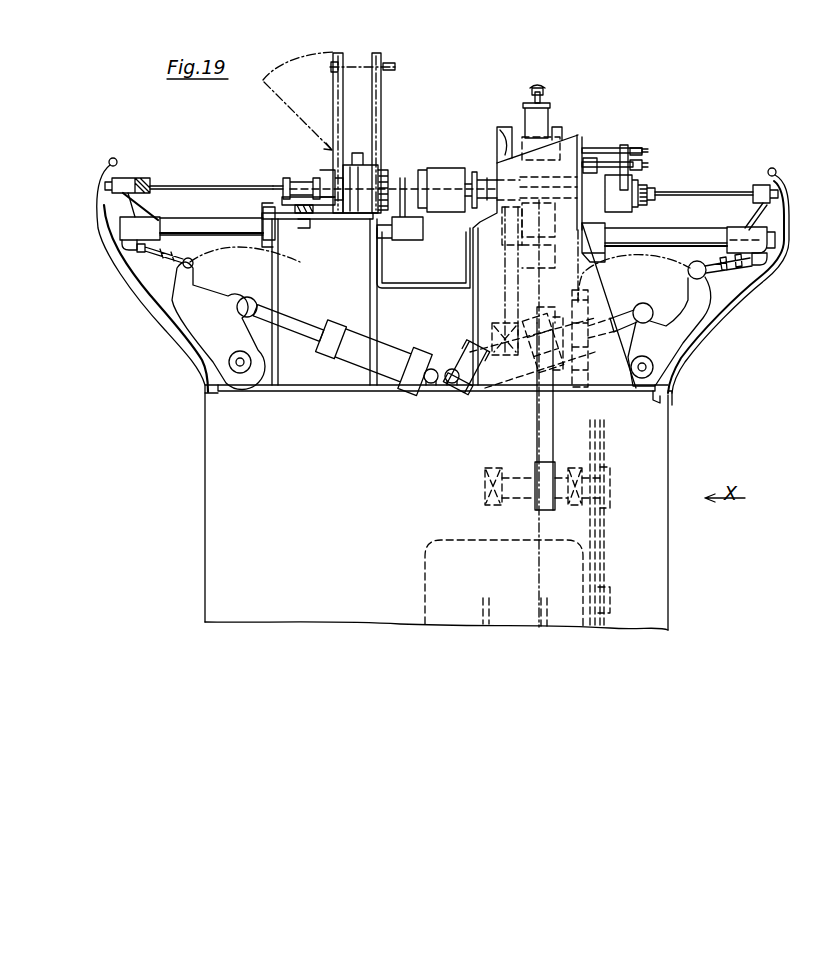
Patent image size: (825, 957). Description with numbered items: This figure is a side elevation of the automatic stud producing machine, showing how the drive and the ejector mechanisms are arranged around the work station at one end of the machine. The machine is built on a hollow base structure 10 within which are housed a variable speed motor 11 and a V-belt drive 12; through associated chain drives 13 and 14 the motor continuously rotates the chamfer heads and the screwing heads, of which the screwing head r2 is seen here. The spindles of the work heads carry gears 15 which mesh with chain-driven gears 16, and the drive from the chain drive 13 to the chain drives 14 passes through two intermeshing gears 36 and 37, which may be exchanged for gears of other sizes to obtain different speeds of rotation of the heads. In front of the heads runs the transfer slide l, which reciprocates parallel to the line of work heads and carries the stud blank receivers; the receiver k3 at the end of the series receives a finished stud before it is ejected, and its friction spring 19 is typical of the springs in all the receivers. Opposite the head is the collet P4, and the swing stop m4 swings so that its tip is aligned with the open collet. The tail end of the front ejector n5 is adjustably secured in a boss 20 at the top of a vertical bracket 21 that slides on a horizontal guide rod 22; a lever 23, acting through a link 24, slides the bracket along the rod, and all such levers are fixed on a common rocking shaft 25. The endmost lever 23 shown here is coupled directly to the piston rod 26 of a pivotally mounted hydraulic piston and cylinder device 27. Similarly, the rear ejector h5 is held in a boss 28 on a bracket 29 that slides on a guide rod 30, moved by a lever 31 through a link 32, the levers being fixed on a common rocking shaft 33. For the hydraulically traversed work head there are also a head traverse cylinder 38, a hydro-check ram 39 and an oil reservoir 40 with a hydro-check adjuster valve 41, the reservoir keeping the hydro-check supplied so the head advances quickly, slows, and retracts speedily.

The hollow base structure 10 is at (212, 518).
The variable speed motor 11 is at (428, 563).
The V-belt drive 12 is at (596, 573).
The chain drive 13 is at (538, 405).
The chain drive 14 is at (512, 305).
The gear 15 is at (546, 207).
The chain-driven gear 16 is at (551, 247).
The friction spring 19 is at (293, 178).
The boss 20 is at (123, 183).
The bracket 21 is at (140, 215).
The guide rod 22 is at (243, 216).
The lever 23 is at (186, 313).
The link 24 is at (180, 265).
The rocking shaft 25 is at (232, 364).
The piston rod 26 is at (298, 330).
The piston and cylinder device 27 is at (355, 388).
The boss 28 is at (765, 188).
The bracket 29 is at (755, 212).
The guide rod 30 is at (676, 234).
The lever 31 is at (700, 313).
The link 32 is at (729, 258).
The rocking shaft 33 is at (652, 367).
The gear 36 is at (586, 372).
The gear 37 is at (600, 287).
The head traverse cylinder 38 is at (511, 143).
The hydro-check ram 39 is at (595, 163).
The oil reservoir 40 is at (548, 118).
The hydro-check adjuster valve 41 is at (546, 94).
The receiver k3 is at (313, 177).
The collet P4 is at (378, 168).
The screwing head r2 is at (442, 190).
The swing stop m4 is at (407, 218).
The front ejector n5 is at (227, 187).
The rear ejector h5 is at (686, 192).
The transfer slide l is at (306, 219).